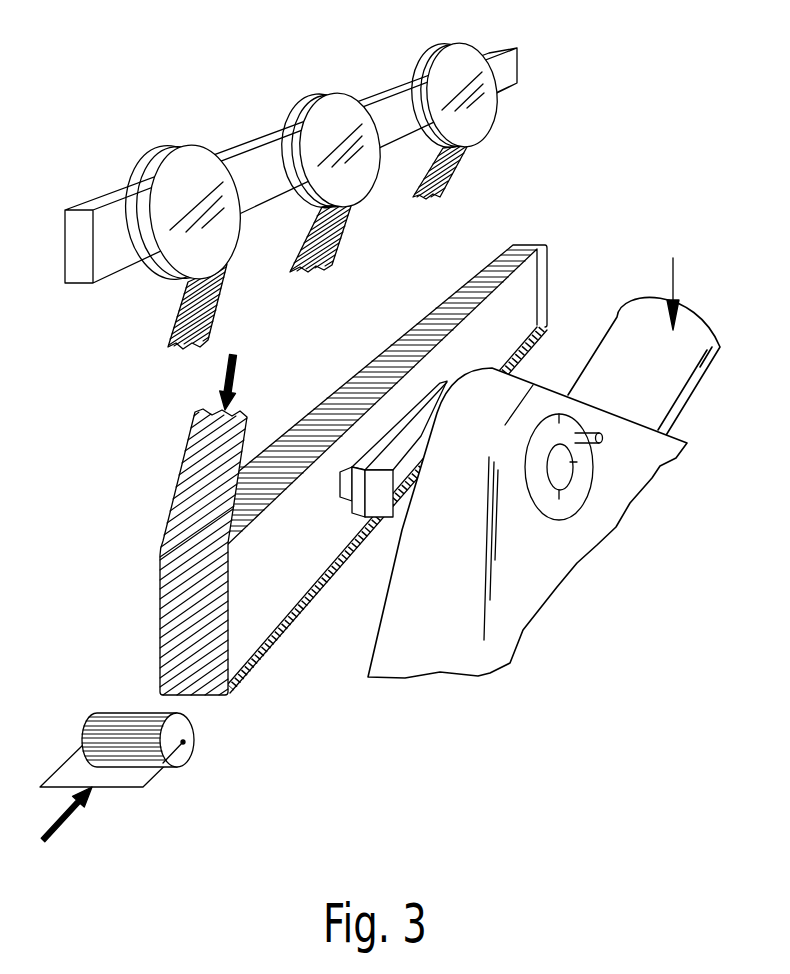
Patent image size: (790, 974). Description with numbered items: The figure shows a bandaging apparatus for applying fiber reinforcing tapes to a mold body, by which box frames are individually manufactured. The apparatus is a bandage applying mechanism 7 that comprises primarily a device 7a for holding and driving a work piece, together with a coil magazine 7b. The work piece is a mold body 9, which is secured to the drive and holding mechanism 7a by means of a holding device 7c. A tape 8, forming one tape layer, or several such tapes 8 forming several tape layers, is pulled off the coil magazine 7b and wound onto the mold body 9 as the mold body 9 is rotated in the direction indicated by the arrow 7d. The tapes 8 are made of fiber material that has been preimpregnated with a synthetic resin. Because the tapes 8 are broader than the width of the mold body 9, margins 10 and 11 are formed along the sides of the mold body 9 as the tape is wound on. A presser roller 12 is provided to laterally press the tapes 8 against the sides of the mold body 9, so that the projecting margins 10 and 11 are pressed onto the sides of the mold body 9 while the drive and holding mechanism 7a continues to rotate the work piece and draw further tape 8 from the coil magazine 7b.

The bandage applying mechanism 7 is at (600, 162).
The device for holding and driving a work piece 7a is at (523, 593).
The coil magazine 7b is at (258, 162).
The holding device 7c is at (373, 493).
The arrow 7d is at (222, 377).
The tape 8 is at (213, 297).
The mold body 9 is at (527, 303).
The margin 10 is at (268, 655).
The margin 11 is at (168, 620).
The presser roller 12 is at (187, 748).